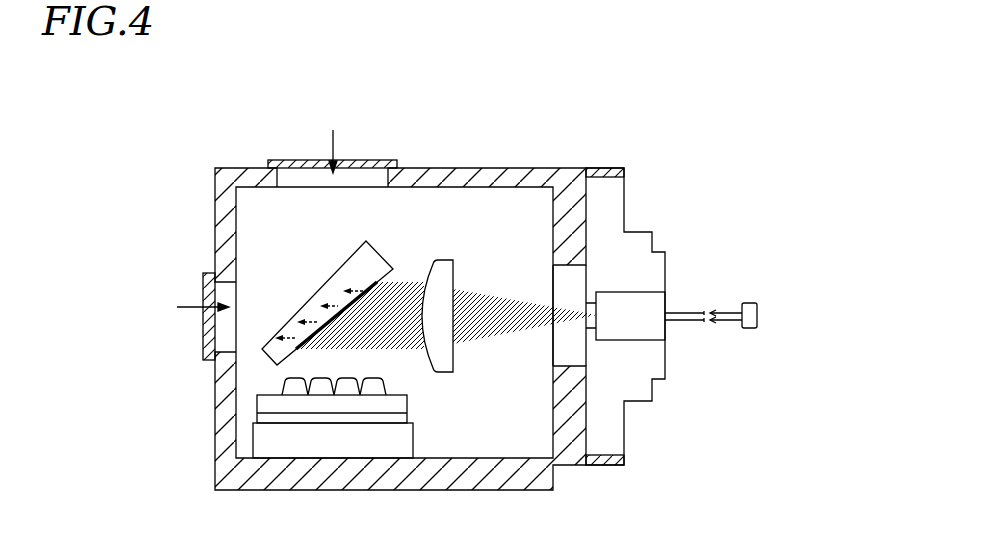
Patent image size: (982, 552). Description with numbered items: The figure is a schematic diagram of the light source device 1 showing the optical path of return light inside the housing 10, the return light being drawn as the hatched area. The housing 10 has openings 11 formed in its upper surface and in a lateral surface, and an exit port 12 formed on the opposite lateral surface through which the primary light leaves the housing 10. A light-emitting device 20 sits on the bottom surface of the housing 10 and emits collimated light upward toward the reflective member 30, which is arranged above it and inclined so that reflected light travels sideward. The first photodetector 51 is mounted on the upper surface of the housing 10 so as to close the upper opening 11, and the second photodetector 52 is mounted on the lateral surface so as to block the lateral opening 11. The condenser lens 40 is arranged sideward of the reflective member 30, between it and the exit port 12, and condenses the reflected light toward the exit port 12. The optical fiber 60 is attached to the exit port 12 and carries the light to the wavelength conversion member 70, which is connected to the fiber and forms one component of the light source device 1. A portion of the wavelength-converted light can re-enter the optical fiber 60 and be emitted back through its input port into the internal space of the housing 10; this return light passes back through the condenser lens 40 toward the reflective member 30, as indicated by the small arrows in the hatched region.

The light source device 1 is at (645, 132).
The housing 10 is at (497, 477).
The opening 11 is at (249, 212).
The exit port 12 is at (580, 356).
The light-emitting device 20 is at (270, 439).
The reflective member 30 is at (372, 268).
The condenser lens 40 is at (442, 270).
The first photodetector 51 is at (272, 160).
The second photodetector 52 is at (203, 283).
The optical fiber 60 is at (731, 313).
The wavelength conversion member 70 is at (758, 310).